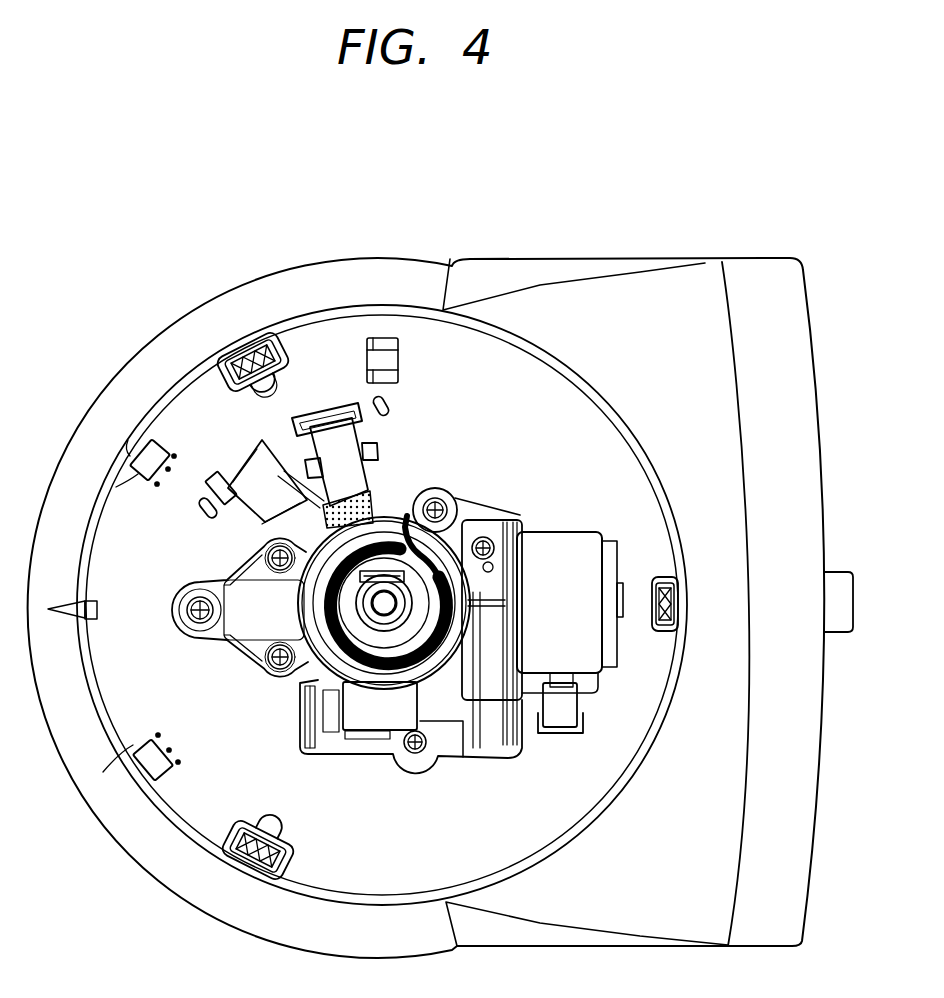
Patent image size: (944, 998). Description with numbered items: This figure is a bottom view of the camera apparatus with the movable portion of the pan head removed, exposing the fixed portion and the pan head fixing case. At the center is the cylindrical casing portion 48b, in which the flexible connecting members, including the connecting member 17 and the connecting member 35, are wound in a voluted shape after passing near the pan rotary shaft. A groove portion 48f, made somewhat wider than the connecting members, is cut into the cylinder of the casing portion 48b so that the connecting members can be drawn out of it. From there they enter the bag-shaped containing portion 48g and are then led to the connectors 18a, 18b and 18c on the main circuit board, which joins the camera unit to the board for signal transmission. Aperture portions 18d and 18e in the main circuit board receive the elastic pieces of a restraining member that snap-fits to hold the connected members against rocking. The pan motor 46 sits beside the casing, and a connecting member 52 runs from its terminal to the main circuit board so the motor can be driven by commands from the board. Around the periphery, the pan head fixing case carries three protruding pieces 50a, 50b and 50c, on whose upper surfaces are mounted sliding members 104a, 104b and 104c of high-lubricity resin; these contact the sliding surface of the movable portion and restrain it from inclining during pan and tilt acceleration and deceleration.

The connecting member 17 is at (336, 433).
The connector 18a is at (380, 452).
The connector 18b is at (370, 426).
The connector 18c is at (214, 478).
The aperture portion 18d is at (204, 519).
The aperture portion 18e is at (390, 403).
The connecting member 35 is at (275, 483).
The pan motor 46 is at (556, 541).
The casing portion 48b is at (322, 654).
The groove portion 48f is at (462, 494).
The containing portion 48g is at (216, 572).
The protruding piece 50a is at (286, 352).
The protruding piece 50b is at (291, 866).
The protruding piece 50c is at (659, 633).
The connecting member 52 is at (550, 705).
The sliding member 104a is at (246, 392).
The sliding member 104b is at (284, 848).
The sliding member 104c is at (657, 576).